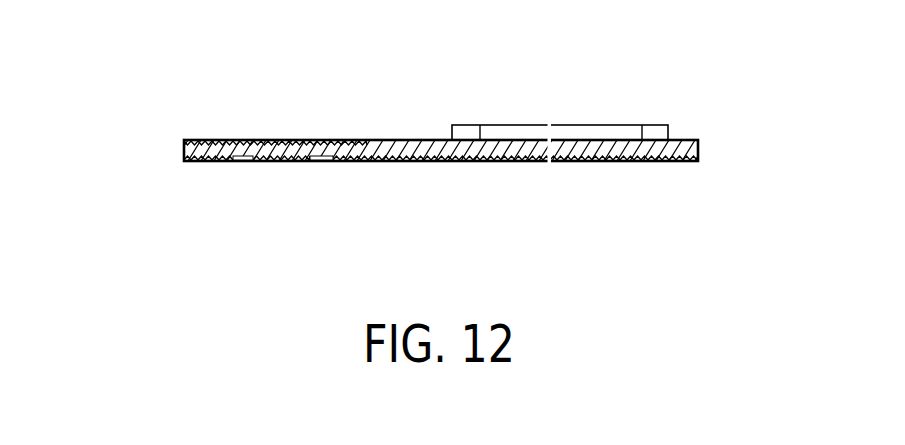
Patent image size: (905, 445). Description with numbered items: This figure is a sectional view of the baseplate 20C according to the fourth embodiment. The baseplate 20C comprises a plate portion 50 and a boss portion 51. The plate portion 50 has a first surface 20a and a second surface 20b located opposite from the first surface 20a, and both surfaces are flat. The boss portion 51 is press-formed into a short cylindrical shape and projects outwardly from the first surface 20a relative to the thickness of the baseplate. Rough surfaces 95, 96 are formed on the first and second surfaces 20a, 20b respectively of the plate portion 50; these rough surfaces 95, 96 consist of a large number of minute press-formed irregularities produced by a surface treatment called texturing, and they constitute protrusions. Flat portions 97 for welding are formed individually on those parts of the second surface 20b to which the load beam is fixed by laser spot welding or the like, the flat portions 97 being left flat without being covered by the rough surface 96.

The baseplate 20C is at (426, 141).
The first surface 20a is at (410, 139).
The second surface 20b is at (457, 163).
The rough surface 95 is at (313, 139).
The rough surface 96 is at (403, 163).
The flat portion 97 is at (244, 163).
The plate portion 50 is at (582, 163).
The boss portion 51 is at (652, 125).